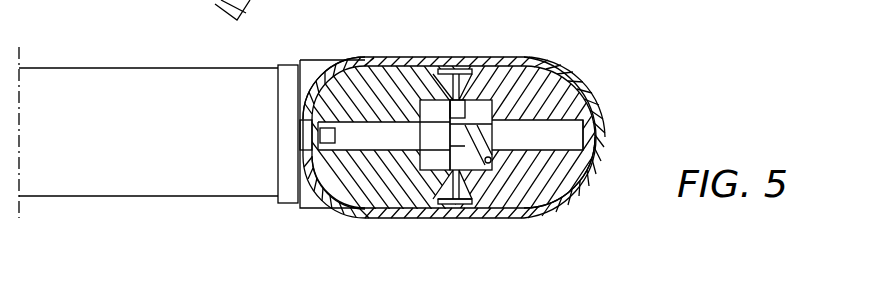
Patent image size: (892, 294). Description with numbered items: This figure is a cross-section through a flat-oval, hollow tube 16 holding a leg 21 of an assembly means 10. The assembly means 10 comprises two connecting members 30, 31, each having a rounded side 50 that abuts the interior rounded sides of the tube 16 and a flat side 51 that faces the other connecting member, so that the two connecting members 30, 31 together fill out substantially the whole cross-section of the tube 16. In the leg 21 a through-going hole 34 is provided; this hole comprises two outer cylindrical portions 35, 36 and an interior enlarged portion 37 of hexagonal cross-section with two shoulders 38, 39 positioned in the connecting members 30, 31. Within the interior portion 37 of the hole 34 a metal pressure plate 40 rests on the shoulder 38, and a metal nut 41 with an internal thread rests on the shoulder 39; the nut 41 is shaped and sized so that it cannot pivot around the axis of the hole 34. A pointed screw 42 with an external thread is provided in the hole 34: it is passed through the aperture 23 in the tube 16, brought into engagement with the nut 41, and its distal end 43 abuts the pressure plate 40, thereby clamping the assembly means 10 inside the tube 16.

The assembly means 10 is at (392, 80).
The hollow tube 16 is at (470, 58).
The leg 21 is at (565, 80).
The aperture 23 is at (306, 137).
The connecting member 30 is at (572, 165).
The connecting member 31 is at (357, 207).
The through-going hole 34 is at (590, 163).
The outer cylindrical portion 35 is at (568, 136).
The outer cylindrical portion 36 is at (367, 64).
The interior enlarged portion 37 is at (479, 97).
The shoulder 38 is at (492, 163).
The shoulder 39 is at (432, 98).
The pressure plate 40 is at (473, 183).
The nut 41 is at (424, 206).
The pointed screw 42 is at (364, 133).
The distal end 43 is at (509, 86).
The rounded side 50 is at (312, 98).
The flat side 51 is at (455, 68).